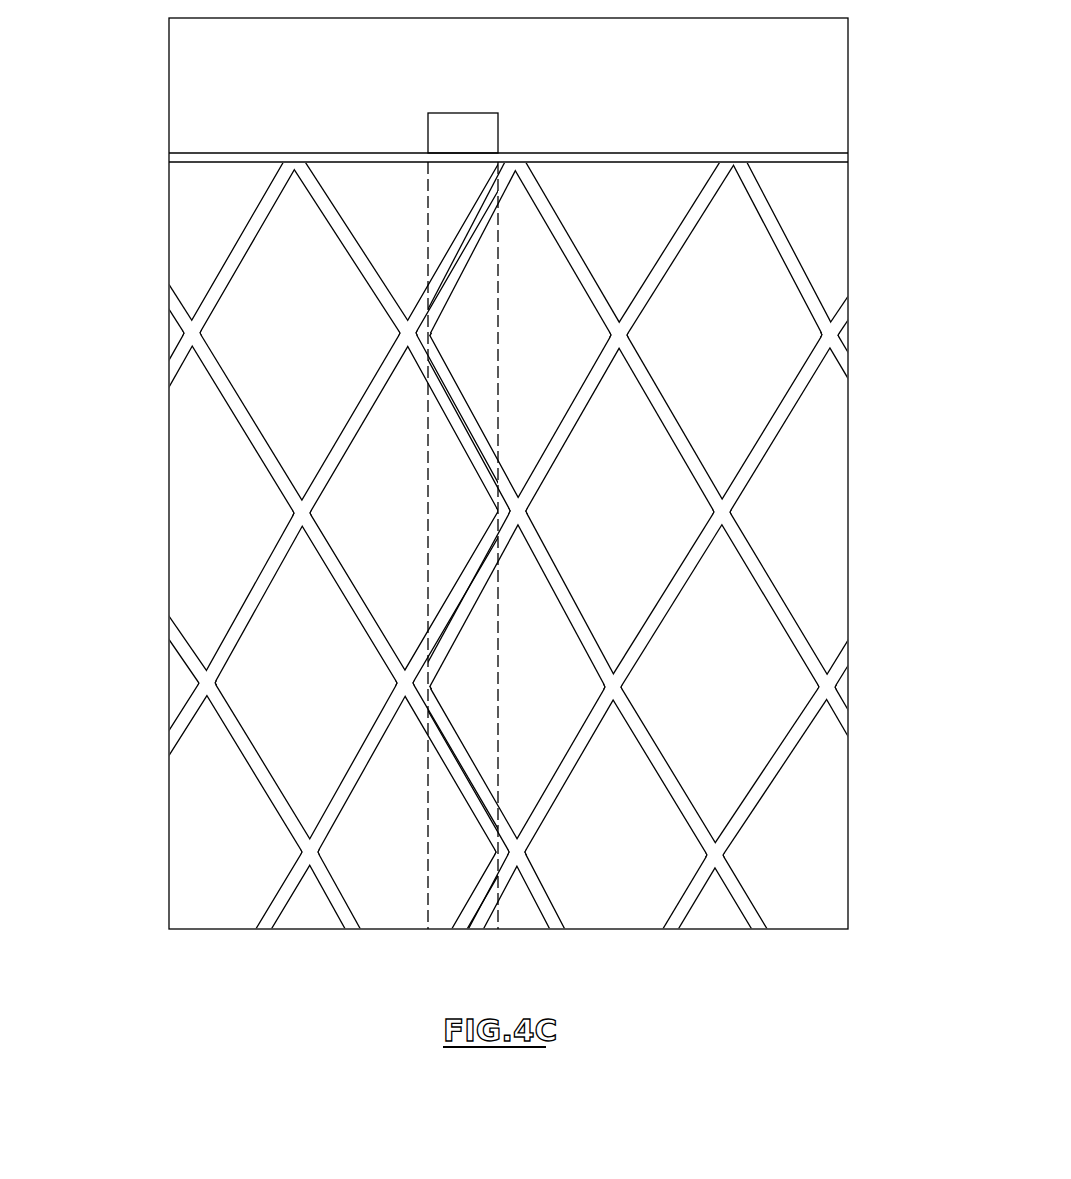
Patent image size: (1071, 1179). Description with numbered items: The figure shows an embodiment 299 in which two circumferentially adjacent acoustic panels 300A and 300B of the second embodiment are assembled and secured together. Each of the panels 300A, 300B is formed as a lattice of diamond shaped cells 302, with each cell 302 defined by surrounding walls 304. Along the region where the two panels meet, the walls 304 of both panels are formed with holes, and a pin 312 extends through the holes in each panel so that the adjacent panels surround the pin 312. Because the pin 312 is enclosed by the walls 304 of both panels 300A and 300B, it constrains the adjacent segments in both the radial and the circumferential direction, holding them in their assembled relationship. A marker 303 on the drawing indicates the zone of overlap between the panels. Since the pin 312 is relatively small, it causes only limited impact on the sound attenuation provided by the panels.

The embodiment 299 is at (114, 226).
The assembled panel 300A is at (140, 393).
The assembled panel 300B is at (868, 380).
The diamond shaped cell 302 is at (262, 283).
The overlap region marker 303 is at (513, 160).
The wall 304 is at (334, 230).
The pin 312 is at (450, 886).